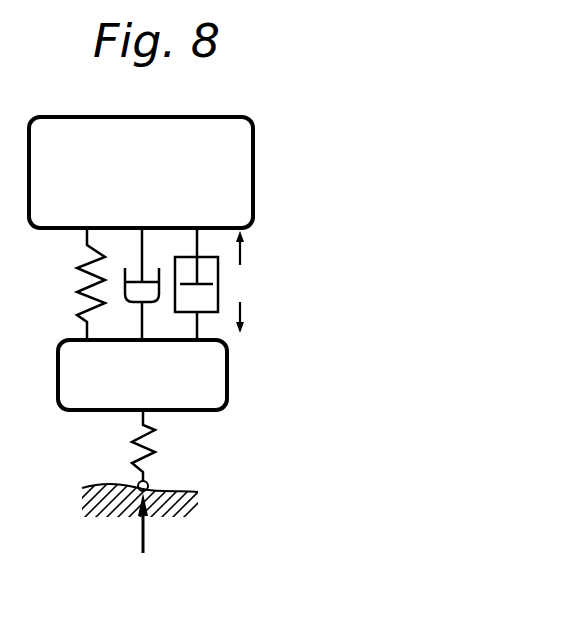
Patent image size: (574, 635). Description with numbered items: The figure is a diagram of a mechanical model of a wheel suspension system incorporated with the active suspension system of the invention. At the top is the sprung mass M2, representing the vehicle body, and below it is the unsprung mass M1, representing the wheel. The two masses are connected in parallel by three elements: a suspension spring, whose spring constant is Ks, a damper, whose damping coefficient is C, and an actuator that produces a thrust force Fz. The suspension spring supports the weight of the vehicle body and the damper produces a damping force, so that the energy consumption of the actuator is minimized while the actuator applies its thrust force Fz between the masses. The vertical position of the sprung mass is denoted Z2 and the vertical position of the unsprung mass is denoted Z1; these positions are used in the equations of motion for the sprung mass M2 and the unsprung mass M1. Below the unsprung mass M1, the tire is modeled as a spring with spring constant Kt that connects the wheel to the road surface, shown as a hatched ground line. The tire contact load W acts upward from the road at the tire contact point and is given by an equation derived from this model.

The sprung mass M2 is at (141, 172).
The unsprung mass M1 is at (142, 375).
The spring constant of the suspension spring Ks is at (72, 284).
The damping coefficient of the damper C is at (143, 284).
The thrust force of the actuator Fz is at (214, 284).
The position of the sprung mass Z2 is at (253, 170).
The position of the unsprung mass Z1 is at (227, 373).
The spring constant of the tire Kt is at (122, 450).
The tire contact load W is at (145, 539).